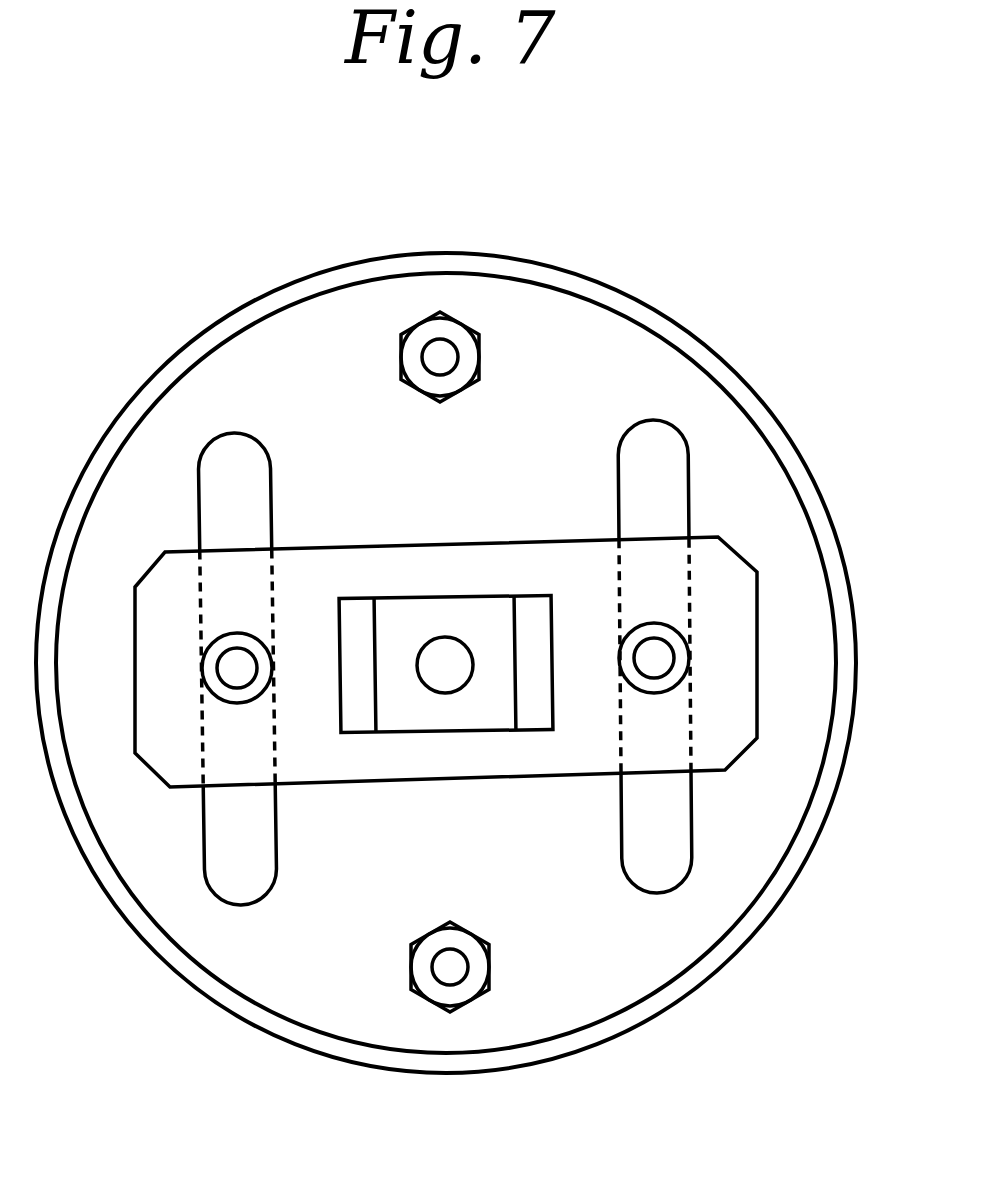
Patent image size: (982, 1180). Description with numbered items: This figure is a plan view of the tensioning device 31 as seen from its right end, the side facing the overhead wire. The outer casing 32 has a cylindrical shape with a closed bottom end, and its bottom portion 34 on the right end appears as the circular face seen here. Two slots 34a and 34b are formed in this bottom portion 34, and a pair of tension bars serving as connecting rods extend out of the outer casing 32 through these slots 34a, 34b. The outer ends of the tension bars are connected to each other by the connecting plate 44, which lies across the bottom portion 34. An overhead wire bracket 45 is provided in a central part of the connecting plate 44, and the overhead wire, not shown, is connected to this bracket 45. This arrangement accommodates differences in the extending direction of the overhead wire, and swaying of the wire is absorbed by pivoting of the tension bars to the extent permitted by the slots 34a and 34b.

The tensioning device 31 is at (665, 290).
The outer casing 32 is at (750, 383).
The bottom portion 34 is at (693, 943).
The slot 34a is at (628, 822).
The slot 34b is at (262, 812).
The connecting plate 44 is at (325, 577).
The overhead wire bracket 45 is at (529, 615).